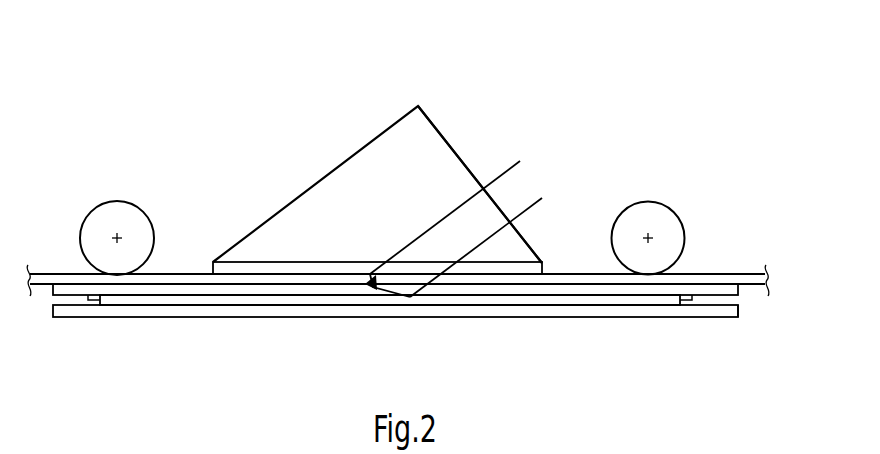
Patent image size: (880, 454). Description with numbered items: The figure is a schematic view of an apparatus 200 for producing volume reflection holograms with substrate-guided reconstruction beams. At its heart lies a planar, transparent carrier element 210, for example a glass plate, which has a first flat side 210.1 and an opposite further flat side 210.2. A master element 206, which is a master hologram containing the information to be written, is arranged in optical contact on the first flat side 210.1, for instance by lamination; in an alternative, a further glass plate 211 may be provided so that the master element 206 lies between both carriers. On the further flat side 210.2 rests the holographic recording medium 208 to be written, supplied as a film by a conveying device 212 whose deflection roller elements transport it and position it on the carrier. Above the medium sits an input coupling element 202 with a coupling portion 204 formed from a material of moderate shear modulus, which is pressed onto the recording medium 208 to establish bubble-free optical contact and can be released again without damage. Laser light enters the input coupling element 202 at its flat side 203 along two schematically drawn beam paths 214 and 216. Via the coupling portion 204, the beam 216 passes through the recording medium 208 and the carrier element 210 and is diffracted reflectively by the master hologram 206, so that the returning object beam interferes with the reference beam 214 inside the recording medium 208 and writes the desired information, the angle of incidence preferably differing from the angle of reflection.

The apparatus 200 is at (621, 89).
The input coupling element 202 is at (345, 187).
The flat side 203 is at (447, 143).
The coupling portion 204 is at (241, 272).
The master element 206 is at (663, 308).
The holographic recording medium 208 is at (567, 275).
The carrier element 210 is at (720, 278).
The first flat side 210.1 is at (88, 298).
The further flat side 210.2 is at (62, 283).
The further glass plate 211 is at (717, 309).
The conveying device 212 is at (127, 203).
The reference beam 214 is at (432, 234).
The reference beam 216 is at (385, 295).